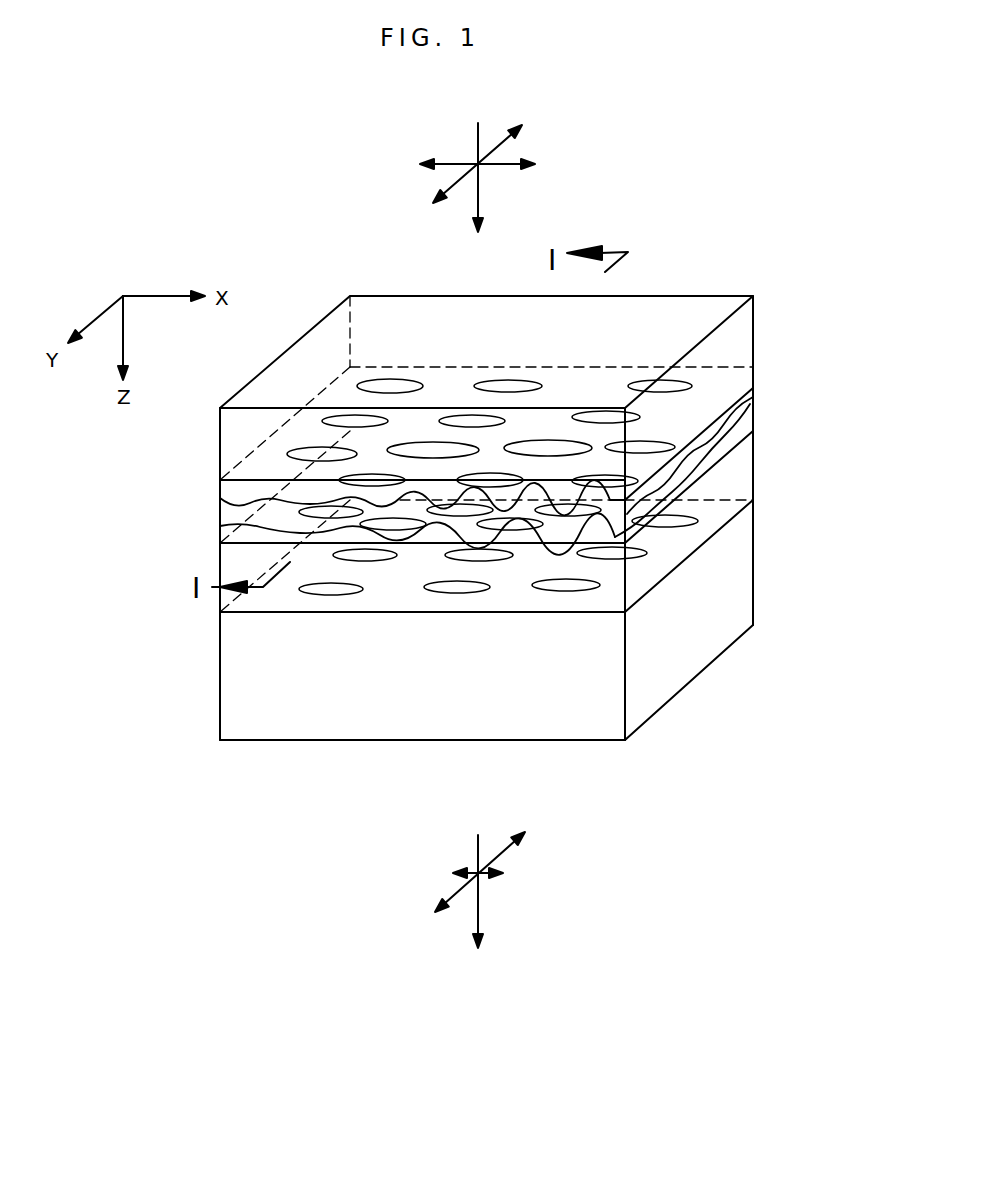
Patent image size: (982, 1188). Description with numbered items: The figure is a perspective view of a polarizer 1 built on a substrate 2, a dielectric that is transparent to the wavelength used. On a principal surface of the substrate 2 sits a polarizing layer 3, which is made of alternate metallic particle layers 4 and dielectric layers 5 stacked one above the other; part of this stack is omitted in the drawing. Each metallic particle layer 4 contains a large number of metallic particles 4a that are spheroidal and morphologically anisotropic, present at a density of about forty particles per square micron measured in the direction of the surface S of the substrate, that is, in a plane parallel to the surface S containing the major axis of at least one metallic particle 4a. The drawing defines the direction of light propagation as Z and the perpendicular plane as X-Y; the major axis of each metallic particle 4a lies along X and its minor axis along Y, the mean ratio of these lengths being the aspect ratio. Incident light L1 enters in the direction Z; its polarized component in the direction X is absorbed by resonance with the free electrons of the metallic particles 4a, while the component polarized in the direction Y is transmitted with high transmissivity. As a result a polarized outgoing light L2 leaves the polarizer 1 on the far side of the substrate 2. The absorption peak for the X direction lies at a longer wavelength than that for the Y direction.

The polarizer 1 is at (158, 533).
The substrate 2 is at (738, 555).
The polarizing layer 3 is at (835, 310).
The metallic particle layer 4 is at (698, 430).
The metallic particle 4a is at (640, 553).
The dielectric layer 5 is at (745, 342).
The surface of the substrate S is at (302, 605).
The incident light L1 is at (477, 163).
The outgoing light L2 is at (480, 908).